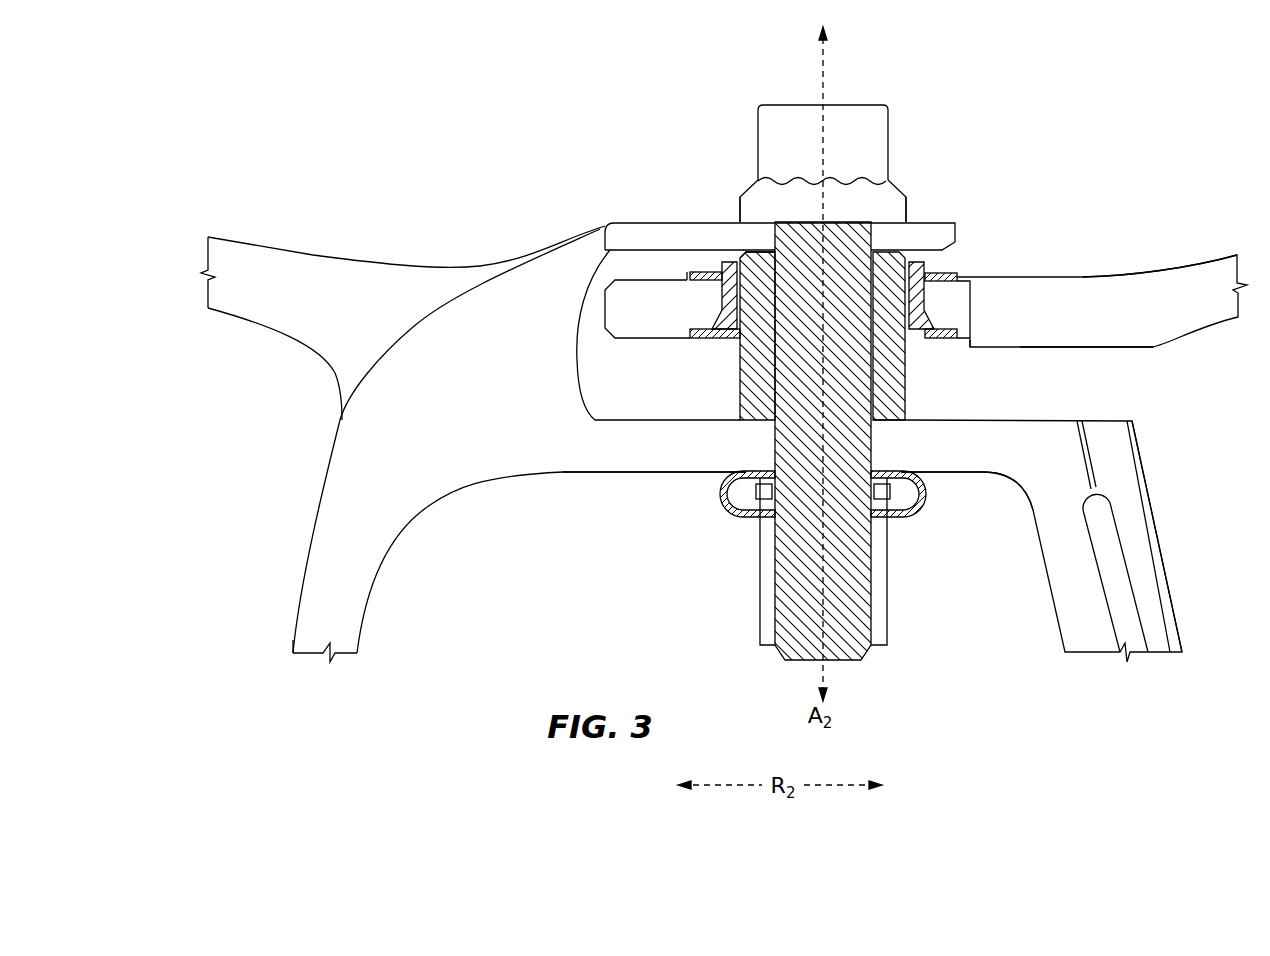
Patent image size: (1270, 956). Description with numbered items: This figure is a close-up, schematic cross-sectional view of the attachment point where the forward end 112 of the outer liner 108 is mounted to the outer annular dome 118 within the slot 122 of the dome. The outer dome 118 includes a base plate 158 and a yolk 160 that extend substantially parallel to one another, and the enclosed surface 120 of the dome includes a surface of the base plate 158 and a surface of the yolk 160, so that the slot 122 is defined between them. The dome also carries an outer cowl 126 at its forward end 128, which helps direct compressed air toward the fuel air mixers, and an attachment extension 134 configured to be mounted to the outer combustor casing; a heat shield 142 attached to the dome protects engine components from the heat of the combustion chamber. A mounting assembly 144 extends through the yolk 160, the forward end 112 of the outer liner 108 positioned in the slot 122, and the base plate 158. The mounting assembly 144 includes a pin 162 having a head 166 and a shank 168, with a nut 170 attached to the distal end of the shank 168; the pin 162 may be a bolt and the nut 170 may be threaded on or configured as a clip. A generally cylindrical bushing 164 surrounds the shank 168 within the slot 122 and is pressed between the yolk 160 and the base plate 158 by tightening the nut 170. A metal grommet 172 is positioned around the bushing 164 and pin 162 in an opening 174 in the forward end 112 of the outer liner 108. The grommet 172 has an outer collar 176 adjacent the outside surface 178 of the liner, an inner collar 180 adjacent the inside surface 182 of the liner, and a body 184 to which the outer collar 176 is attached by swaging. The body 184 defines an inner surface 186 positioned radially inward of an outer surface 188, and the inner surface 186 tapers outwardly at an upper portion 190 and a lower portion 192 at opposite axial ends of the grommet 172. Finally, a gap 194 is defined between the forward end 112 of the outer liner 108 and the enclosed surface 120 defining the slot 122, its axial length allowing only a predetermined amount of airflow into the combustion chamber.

The outer liner 108 is at (1138, 272).
The forward end of the outer liner 112 is at (630, 398).
The outer annular dome 118 is at (375, 490).
The enclosed surface 120 is at (618, 261).
The slot 122 is at (925, 372).
The outer cowl 126 is at (305, 631).
The forward end of the outer dome 128 is at (236, 551).
The attachment extension 134 is at (237, 258).
The heat shield 142 is at (1137, 540).
The mounting assembly 144 is at (937, 146).
The base plate 158 is at (678, 440).
The yolk 160 is at (668, 233).
The pin 162 is at (857, 195).
The bushing 164 is at (918, 420).
The head 166 is at (776, 118).
The shank 168 is at (798, 561).
The nut 170 is at (927, 498).
The metal grommet 172 is at (927, 310).
The opening 174 is at (886, 296).
The outer collar 176 is at (928, 300).
The outside surface 178 is at (1090, 274).
The inner collar 180 is at (940, 352).
The inside surface 182 is at (1027, 358).
The body 184 is at (716, 298).
The inner surface 186 is at (757, 314).
The outer surface 188 is at (716, 317).
The upper portion 190 is at (748, 256).
The lower portion 192 is at (903, 340).
The gap 194 is at (592, 313).